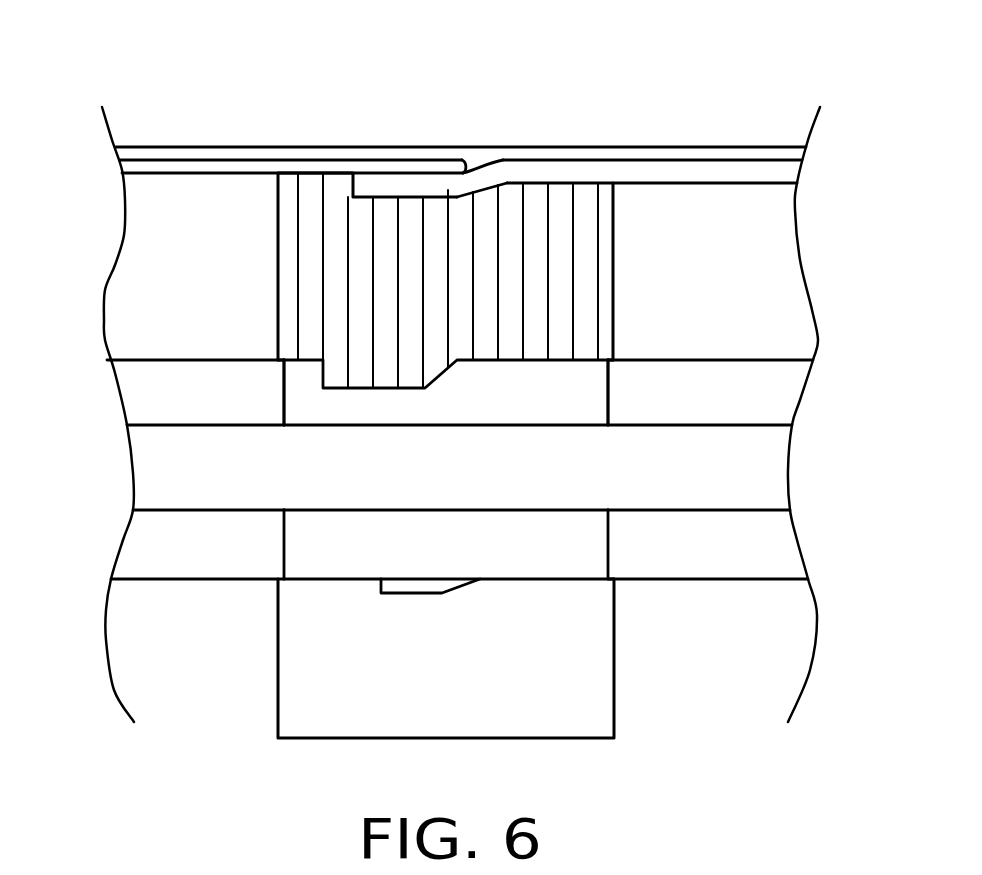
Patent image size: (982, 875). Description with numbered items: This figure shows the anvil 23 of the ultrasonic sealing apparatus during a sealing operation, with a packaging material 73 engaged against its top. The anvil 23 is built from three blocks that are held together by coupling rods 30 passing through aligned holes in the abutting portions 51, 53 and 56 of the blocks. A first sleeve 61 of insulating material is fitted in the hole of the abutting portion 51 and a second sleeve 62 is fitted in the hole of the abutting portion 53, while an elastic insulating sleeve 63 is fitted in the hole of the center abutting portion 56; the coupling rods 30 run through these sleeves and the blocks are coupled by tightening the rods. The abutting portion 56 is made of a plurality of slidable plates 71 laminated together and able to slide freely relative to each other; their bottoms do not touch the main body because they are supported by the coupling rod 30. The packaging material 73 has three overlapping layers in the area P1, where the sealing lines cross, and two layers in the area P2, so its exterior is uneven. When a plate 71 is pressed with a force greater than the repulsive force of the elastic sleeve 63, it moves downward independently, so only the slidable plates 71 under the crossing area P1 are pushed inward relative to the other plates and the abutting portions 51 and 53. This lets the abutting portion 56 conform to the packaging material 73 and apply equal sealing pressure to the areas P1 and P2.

The anvil 23 is at (469, 79).
The coupling rod 30 is at (752, 476).
The abutting portion 51 is at (148, 207).
The abutting portion 53 is at (677, 215).
The abutting portion 56 is at (532, 176).
The first sleeve 61 is at (160, 390).
The second sleeve 62 is at (768, 392).
The sleeve 63 is at (300, 397).
The slidable plate 71 is at (313, 190).
The packaging material 73 is at (782, 155).
The sealing area P1 is at (403, 168).
The sealing area P2 is at (650, 155).